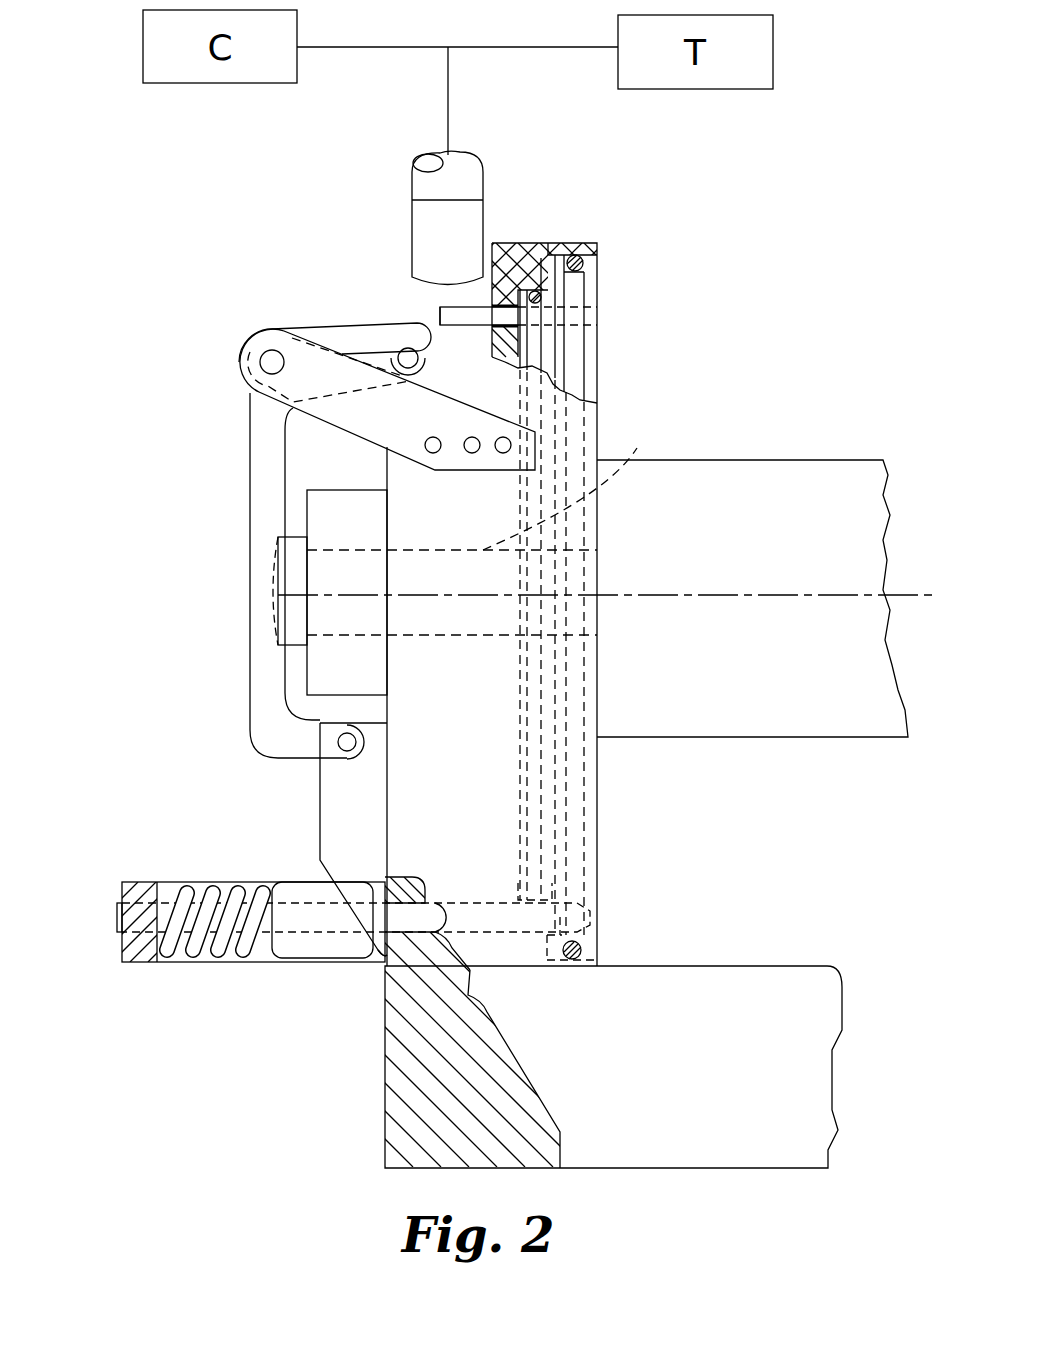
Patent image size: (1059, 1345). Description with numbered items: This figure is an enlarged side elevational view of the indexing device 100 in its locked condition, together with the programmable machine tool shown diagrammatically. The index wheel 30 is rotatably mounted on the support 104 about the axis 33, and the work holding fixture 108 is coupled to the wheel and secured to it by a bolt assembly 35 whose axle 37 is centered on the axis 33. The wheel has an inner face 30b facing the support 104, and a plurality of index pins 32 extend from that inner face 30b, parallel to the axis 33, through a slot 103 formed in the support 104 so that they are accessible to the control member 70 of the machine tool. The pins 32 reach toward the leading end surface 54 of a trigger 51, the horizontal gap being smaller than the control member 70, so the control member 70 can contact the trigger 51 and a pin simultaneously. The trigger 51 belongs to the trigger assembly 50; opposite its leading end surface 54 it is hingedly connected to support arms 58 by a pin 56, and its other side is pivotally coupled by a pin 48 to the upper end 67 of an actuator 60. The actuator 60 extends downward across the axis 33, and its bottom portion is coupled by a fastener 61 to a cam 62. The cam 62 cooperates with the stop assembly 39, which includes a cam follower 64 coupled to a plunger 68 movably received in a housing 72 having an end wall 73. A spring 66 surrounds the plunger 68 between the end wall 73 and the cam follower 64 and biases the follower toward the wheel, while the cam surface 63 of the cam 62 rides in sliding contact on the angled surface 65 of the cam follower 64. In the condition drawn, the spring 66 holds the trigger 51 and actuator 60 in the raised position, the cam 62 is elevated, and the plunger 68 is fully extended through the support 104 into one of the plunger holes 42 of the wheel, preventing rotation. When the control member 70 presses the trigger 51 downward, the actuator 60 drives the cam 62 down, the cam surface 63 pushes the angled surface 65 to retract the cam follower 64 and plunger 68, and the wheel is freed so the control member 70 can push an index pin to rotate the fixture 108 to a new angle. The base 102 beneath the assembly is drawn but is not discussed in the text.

The indexing device 100 is at (798, 301).
The index wheel 30 is at (598, 367).
The inner face 30b is at (527, 662).
The slot 103 is at (540, 258).
The index pins 32 is at (458, 305).
The leading end surface 54 is at (440, 330).
The control member 70 is at (486, 184).
The support arms 58 is at (268, 330).
The trigger 51 is at (355, 330).
The pin 48 is at (405, 347).
The pin 56 is at (250, 360).
The trigger assembly 50 is at (238, 383).
The upper end 67 is at (420, 378).
The actuator 60 is at (247, 494).
The bolt assembly 35 is at (302, 668).
The axis 33 is at (893, 596).
The axle 37 is at (570, 484).
The work holding fixture 108 is at (733, 478).
The support 104 is at (478, 768).
The fastener 61 is at (330, 735).
The cam 62 is at (320, 800).
The angled surface 65 is at (338, 895).
The cam surface 63 is at (378, 905).
The stop assembly 39 is at (119, 936).
The housing 72 is at (246, 966).
The end wall 73 is at (140, 952).
The plunger 68 is at (115, 903).
The spring 66 is at (197, 960).
The cam follower 64 is at (306, 946).
The plunger holes 42 is at (597, 893).
The base 102 is at (738, 990).